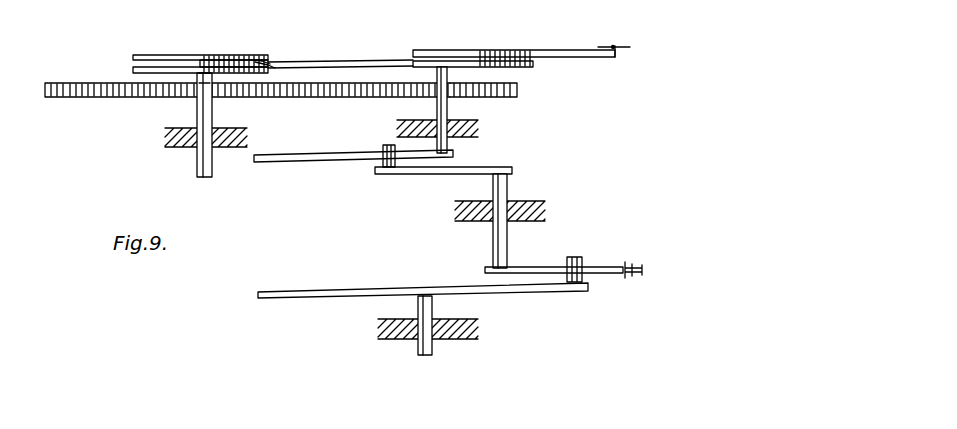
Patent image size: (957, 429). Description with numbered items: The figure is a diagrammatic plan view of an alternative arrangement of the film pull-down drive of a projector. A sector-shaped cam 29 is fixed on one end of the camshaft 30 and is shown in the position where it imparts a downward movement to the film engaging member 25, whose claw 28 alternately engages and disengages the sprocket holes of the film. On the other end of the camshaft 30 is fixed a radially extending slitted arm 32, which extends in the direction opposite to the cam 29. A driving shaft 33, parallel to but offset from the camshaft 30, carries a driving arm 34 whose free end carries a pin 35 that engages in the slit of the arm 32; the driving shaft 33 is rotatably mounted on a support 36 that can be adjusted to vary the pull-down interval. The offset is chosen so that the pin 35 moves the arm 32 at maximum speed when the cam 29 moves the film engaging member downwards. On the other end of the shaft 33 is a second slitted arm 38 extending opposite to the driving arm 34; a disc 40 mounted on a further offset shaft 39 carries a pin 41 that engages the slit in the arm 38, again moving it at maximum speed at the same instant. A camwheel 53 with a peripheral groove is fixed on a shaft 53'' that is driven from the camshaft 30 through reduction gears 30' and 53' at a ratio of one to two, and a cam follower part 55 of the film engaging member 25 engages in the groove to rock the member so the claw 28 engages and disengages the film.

The film engaging member 25 is at (353, 60).
The claw 28 is at (598, 47).
The cam 29 is at (487, 52).
The camshaft 30 is at (413, 110).
The reduction gear 30' is at (505, 99).
The arm 32 is at (309, 162).
The driving shaft 33 is at (507, 180).
The driving arm 34 is at (420, 174).
The pin 35 is at (383, 148).
The support 36 is at (548, 204).
The arm 38 is at (598, 267).
The shaft 39 is at (432, 345).
The disc 40 is at (355, 290).
The pin 41 is at (570, 262).
The camwheel 53 is at (200, 50).
The reduction gear 53' is at (247, 111).
The shaft 53'' is at (175, 127).
The cam follower part 55 is at (276, 63).